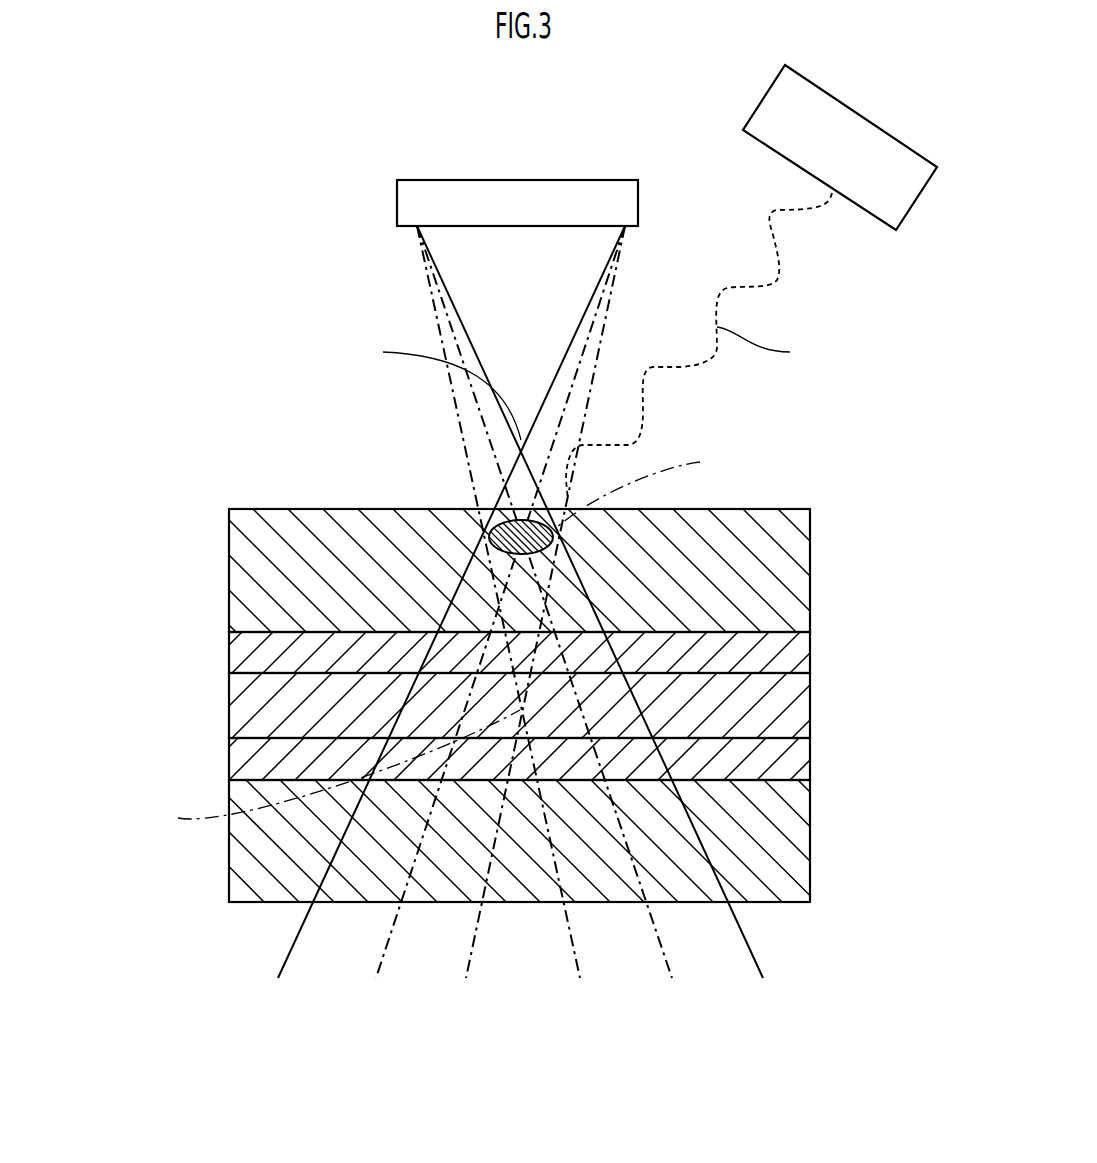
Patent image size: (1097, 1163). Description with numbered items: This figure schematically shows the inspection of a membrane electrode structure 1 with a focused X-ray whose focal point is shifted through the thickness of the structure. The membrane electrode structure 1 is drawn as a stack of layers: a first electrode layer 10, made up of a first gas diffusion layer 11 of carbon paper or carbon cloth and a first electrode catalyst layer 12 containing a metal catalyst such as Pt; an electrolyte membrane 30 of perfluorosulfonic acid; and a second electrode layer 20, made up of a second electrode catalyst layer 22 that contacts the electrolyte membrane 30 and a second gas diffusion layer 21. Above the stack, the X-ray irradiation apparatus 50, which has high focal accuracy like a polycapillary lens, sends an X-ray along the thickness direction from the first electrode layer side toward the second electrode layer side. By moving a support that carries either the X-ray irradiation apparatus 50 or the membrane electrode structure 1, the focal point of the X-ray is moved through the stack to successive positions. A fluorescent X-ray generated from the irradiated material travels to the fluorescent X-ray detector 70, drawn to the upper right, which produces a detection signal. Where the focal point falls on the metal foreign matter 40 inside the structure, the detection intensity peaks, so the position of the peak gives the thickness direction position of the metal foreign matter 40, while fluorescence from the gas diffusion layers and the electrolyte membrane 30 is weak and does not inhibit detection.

The membrane electrode structure 1 is at (256, 487).
The first electrode layer 10 is at (145, 537).
The first gas diffusion layer 11 is at (229, 585).
The first electrode catalyst layer 12 is at (229, 655).
The second electrode layer 20 is at (896, 705).
The second gas diffusion layer 21 is at (810, 826).
The second electrode catalyst layer 22 is at (810, 757).
The electrolyte membrane 30 is at (229, 712).
The metal foreign matter 40 is at (490, 525).
The X-ray irradiation apparatus 50 is at (455, 180).
The fluorescent X-ray detector 70 is at (890, 122).